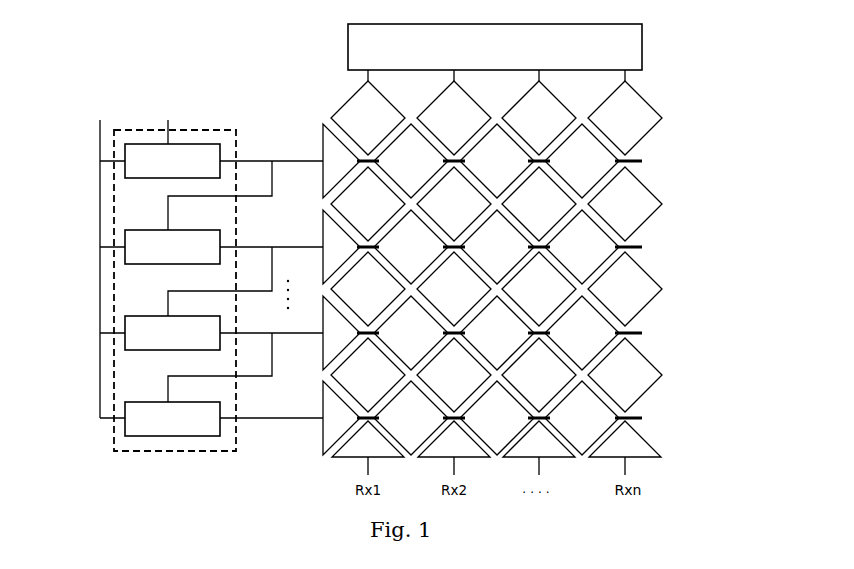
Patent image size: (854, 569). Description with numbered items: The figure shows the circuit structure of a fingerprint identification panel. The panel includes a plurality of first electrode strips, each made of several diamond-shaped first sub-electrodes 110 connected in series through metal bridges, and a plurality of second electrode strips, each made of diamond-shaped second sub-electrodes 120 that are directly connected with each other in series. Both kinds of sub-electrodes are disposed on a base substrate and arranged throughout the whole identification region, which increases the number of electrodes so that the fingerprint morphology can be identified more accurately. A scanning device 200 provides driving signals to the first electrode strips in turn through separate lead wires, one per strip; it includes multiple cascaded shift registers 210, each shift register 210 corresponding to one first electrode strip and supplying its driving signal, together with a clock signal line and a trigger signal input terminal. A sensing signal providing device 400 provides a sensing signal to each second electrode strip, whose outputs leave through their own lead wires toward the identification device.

The first sub-electrode 110 is at (592, 164).
The second sub-electrode 120 is at (365, 113).
The scanning device 200 is at (180, 264).
The shift register 210 is at (150, 173).
The sensing signal providing device 400 is at (495, 52).